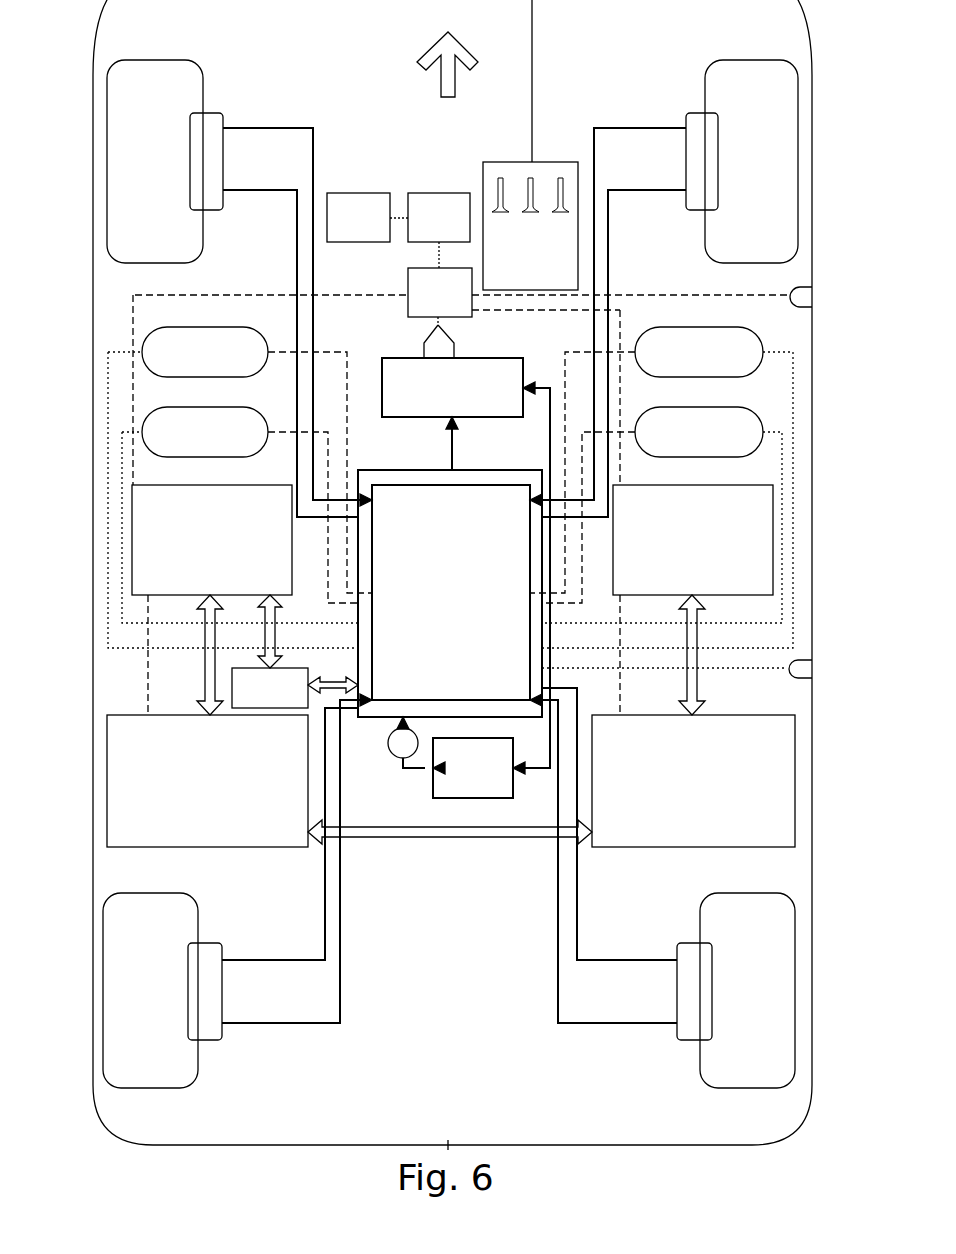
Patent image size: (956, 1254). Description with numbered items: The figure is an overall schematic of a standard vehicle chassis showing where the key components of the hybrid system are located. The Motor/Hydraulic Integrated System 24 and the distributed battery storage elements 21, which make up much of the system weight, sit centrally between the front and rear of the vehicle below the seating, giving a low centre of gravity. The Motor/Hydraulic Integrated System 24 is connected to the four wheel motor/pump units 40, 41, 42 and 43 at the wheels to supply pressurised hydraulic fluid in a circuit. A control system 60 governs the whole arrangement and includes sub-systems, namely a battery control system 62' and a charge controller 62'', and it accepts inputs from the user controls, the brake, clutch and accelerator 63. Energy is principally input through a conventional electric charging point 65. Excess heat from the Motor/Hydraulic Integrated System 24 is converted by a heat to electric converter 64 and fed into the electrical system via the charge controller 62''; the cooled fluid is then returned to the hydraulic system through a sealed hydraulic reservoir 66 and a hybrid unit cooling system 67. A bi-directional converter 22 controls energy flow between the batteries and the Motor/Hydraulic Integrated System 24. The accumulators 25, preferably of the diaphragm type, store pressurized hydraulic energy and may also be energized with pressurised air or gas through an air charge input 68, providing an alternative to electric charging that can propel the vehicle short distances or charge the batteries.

The distributed battery storage elements 21 is at (451, 666).
The bi-directional converter 22 is at (295, 688).
The Motor/Hydraulic Integrated System 24 is at (450, 593).
The accumulators 25 is at (157, 342).
The wheel motor/pump unit 40 is at (207, 135).
The wheel motor/pump unit 41 is at (700, 130).
The wheel motor/pump unit 42 is at (210, 1000).
The wheel motor/pump unit 43 is at (690, 1003).
The control system 60 is at (343, 210).
The battery control system 62' is at (430, 197).
The charge controller 62'' is at (398, 306).
The brake, clutch and accelerator 63 is at (542, 162).
The heat to electric converter 64 is at (466, 563).
The electric charging point 65 is at (816, 292).
The sealed hydraulic reservoir 66 is at (479, 768).
The hybrid unit cooling system 67 is at (392, 750).
The air charge input 68 is at (805, 668).